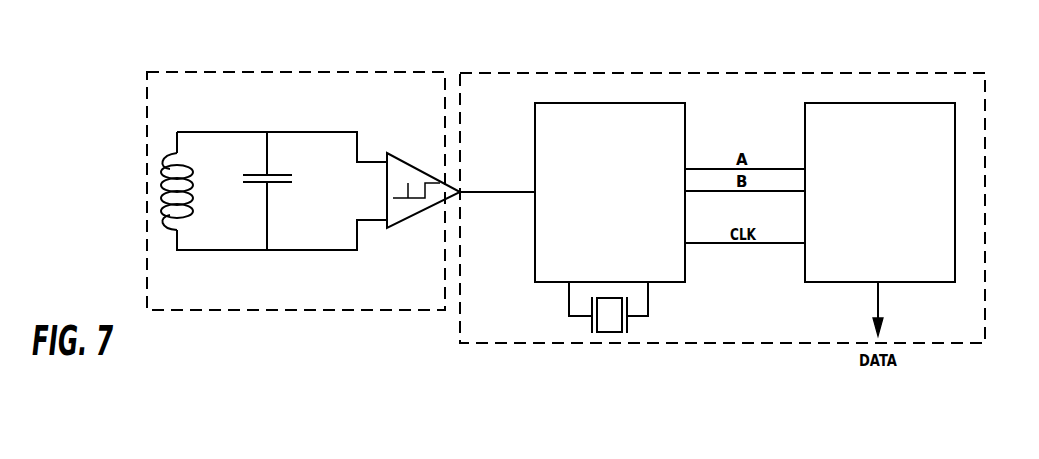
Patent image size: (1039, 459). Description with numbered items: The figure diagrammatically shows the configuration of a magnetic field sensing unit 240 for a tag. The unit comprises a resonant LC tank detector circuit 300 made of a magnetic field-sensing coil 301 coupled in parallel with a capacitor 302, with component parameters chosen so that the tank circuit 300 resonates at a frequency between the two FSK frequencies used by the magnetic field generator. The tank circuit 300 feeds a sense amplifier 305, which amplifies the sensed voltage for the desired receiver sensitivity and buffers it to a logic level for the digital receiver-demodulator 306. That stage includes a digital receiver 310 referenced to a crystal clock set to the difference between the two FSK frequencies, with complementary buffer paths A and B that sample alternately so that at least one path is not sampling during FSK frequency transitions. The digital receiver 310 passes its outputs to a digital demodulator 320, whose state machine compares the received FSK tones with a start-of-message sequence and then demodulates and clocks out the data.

The magnetic field sensing unit 240 is at (202, 72).
The resonant tank circuit 300 is at (245, 203).
The magnetic field-sensing coil 301 is at (160, 198).
The capacitor 302 is at (277, 175).
The sense amplifier 305 is at (420, 170).
The digital receiver-demodulator 306 is at (587, 343).
The digital receiver 310 is at (685, 130).
The digital demodulator 320 is at (955, 145).